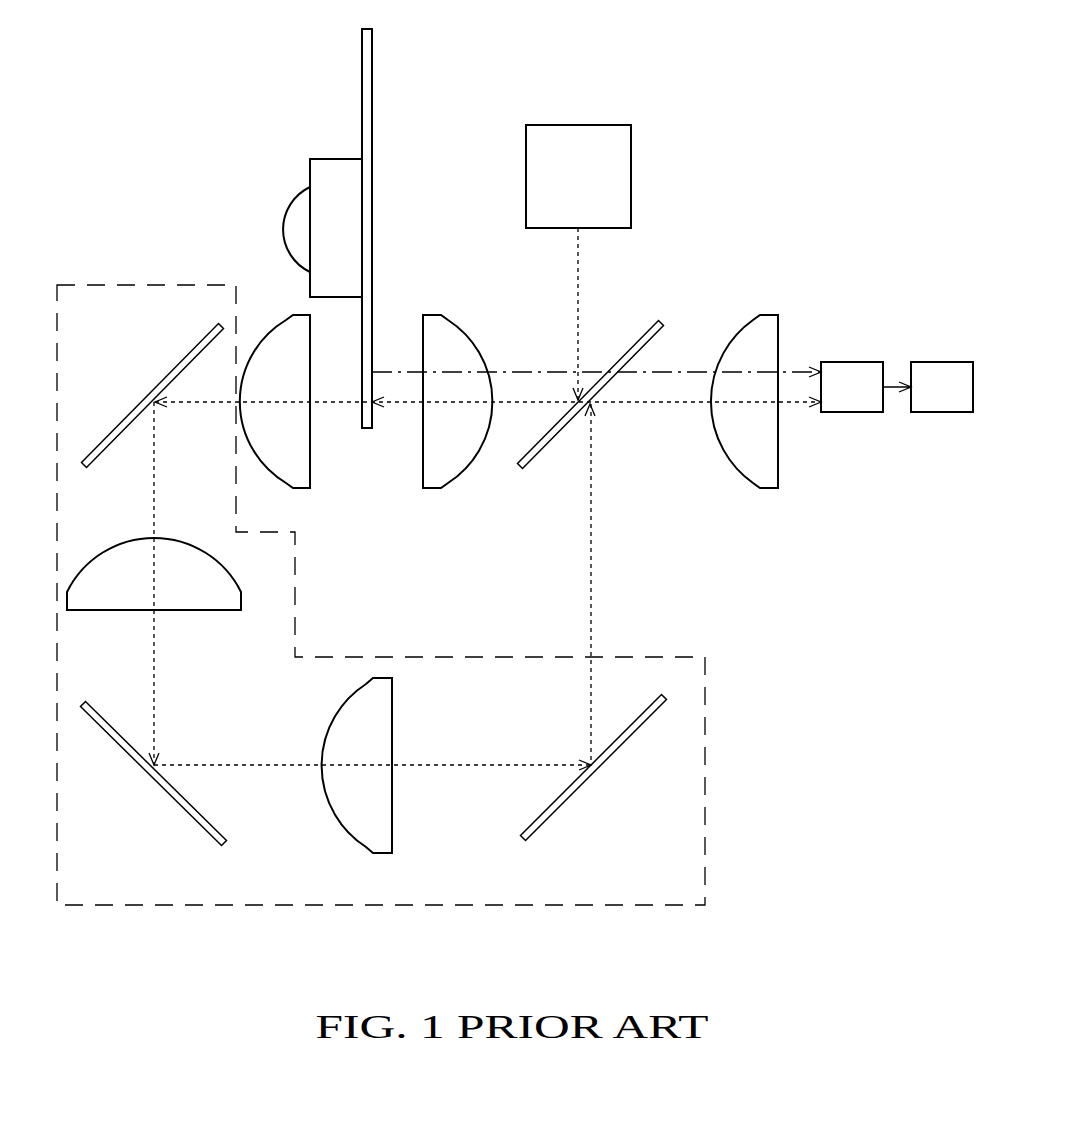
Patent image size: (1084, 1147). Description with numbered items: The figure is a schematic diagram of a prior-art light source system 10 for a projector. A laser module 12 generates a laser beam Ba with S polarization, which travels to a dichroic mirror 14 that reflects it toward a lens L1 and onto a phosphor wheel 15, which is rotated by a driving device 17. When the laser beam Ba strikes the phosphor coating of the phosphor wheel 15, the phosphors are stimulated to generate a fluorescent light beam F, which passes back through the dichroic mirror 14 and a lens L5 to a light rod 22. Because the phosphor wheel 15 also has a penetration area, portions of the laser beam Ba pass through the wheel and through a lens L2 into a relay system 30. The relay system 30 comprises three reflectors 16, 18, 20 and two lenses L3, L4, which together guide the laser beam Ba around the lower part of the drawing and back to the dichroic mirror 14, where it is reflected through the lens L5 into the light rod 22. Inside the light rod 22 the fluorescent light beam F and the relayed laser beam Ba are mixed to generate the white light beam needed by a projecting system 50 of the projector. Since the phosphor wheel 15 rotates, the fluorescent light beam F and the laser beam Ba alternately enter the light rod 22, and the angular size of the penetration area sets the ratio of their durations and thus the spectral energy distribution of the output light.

The light source system 10 is at (194, 85).
The laser module 12 is at (631, 178).
The dichroic mirror 14 is at (665, 325).
The phosphor wheel 15 is at (374, 328).
The reflector 16 is at (183, 357).
The driving device 17 is at (333, 170).
The reflector 18 is at (118, 746).
The reflector 20 is at (640, 728).
The light rod 22 is at (850, 360).
The relay system 30 is at (478, 656).
The projecting system 50 is at (943, 360).
The lens L1 is at (455, 322).
The lens L2 is at (280, 325).
The lens L3 is at (100, 552).
The lens L4 is at (345, 832).
The lens L5 is at (782, 328).
The laser beam Ba is at (580, 284).
The fluorescent light beam F is at (541, 370).